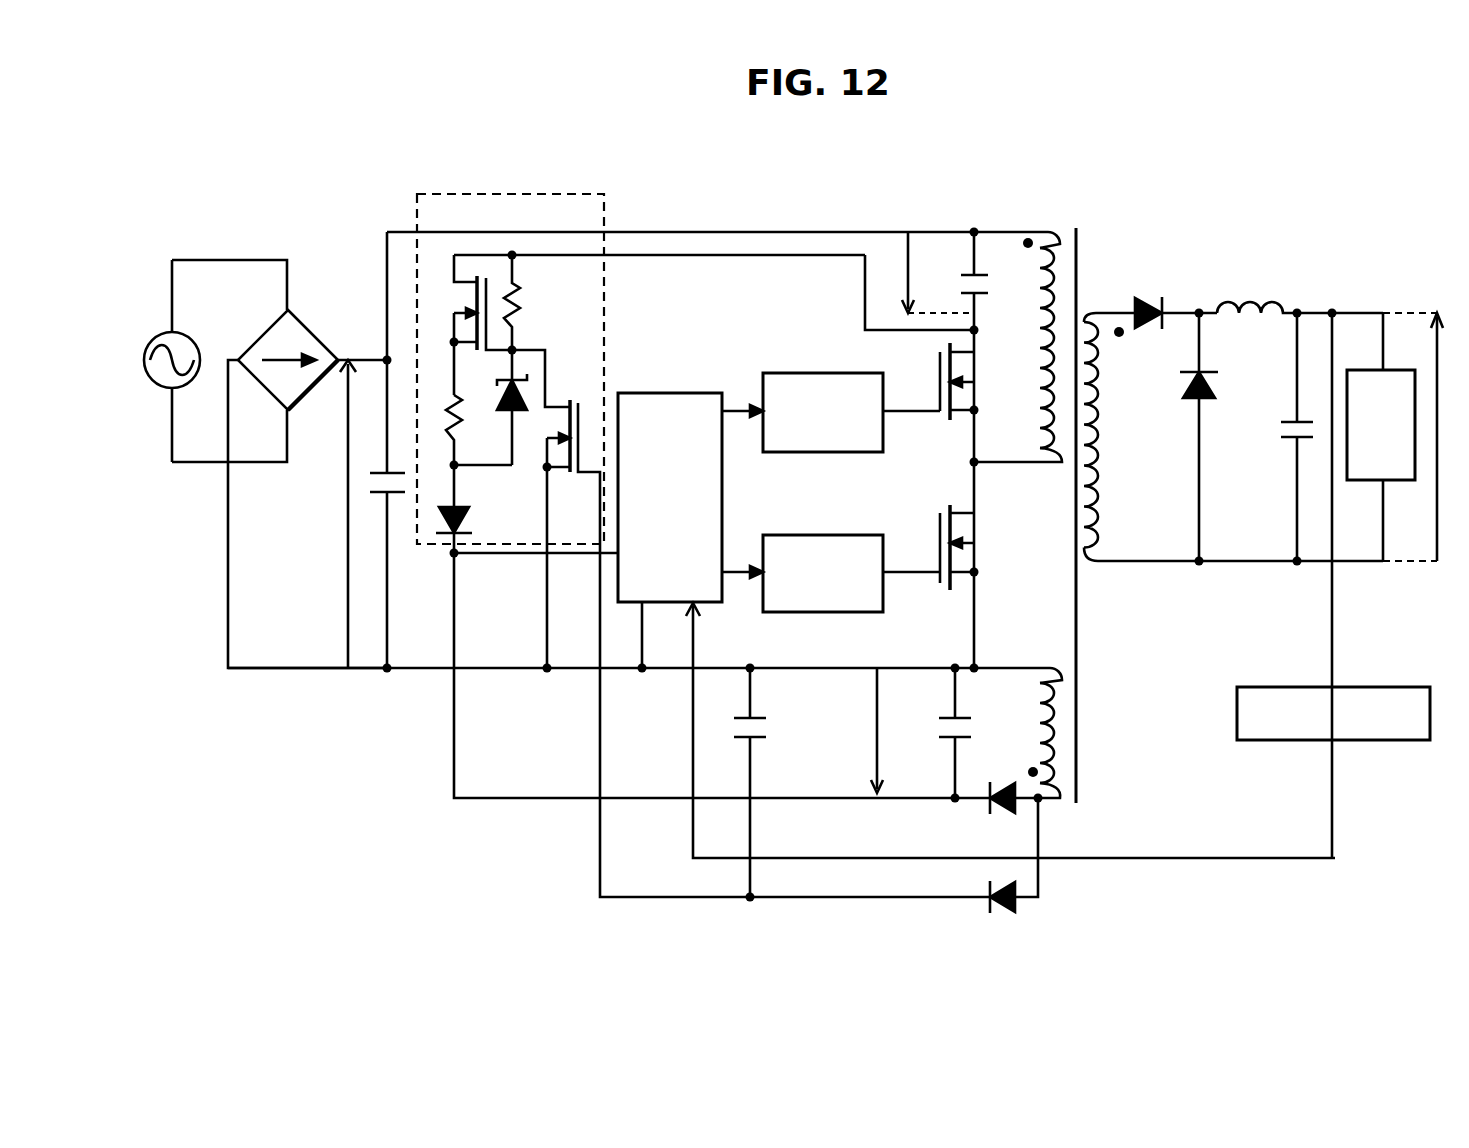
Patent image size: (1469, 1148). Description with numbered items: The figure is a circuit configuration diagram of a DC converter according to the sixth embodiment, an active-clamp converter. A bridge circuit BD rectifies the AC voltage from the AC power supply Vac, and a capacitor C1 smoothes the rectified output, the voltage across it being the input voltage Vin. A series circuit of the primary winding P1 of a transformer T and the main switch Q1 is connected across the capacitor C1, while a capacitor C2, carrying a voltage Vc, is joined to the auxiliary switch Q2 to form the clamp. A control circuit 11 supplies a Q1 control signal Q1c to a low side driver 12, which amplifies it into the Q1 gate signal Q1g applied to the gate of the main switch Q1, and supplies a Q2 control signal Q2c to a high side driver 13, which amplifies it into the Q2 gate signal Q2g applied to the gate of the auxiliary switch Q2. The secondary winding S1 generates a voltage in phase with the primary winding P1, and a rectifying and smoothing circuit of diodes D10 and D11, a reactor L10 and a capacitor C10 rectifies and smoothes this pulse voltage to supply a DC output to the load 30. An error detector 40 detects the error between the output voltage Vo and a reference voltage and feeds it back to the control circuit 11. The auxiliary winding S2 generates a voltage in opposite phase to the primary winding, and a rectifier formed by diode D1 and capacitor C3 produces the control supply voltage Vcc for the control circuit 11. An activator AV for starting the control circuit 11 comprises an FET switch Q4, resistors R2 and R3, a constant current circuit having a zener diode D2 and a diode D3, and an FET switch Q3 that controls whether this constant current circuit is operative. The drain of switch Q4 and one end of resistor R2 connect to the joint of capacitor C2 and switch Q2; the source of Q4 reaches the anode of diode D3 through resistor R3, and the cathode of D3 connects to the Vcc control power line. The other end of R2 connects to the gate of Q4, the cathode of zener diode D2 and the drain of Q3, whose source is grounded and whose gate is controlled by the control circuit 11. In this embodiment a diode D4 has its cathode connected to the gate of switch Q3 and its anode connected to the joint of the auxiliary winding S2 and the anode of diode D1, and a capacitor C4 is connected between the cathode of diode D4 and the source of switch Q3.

The control circuit 11 is at (670, 393).
The low side driver 12 is at (800, 612).
The high side driver 13 is at (831, 373).
The load 30 is at (1368, 481).
The error detector 40 is at (1303, 687).
The AC power supply Vac is at (160, 333).
The bridge circuit BD is at (307, 450).
The capacitor C1 is at (377, 514).
The input voltage Vin is at (346, 514).
The activator AV is at (606, 208).
The FET switch Q4 is at (470, 280).
The resistor R2 is at (531, 302).
The resistor R3 is at (440, 448).
The zener diode D2 is at (490, 407).
The diode D3 is at (695, 652).
The FET switch Q3 is at (751, 623).
The auxiliary switch Q2 is at (941, 381).
The main switch Q1 is at (942, 547).
The Q2 control signal Q2c is at (728, 410).
The Q1 control signal Q1c is at (748, 540).
The Q2 gate signal Q2g is at (915, 414).
The Q1 gate signal Q1g is at (918, 574).
The capacitor C2 is at (961, 268).
The capacitor voltage Vc is at (919, 281).
The capacitor C3 is at (941, 733).
The capacitor C4 is at (736, 783).
The voltage Vcc is at (870, 730).
The transformer T is at (1076, 226).
The primary winding P1 is at (1013, 352).
The secondary winding S1 is at (1144, 434).
The auxiliary winding S2 is at (1024, 706).
The diode D1 is at (999, 817).
The diode D4 is at (1013, 874).
The diode D10 is at (1176, 298).
The reactor L10 is at (1300, 290).
The diode D11 is at (1225, 437).
The capacitor C10 is at (1275, 437).
The output voltage Vo is at (1416, 437).